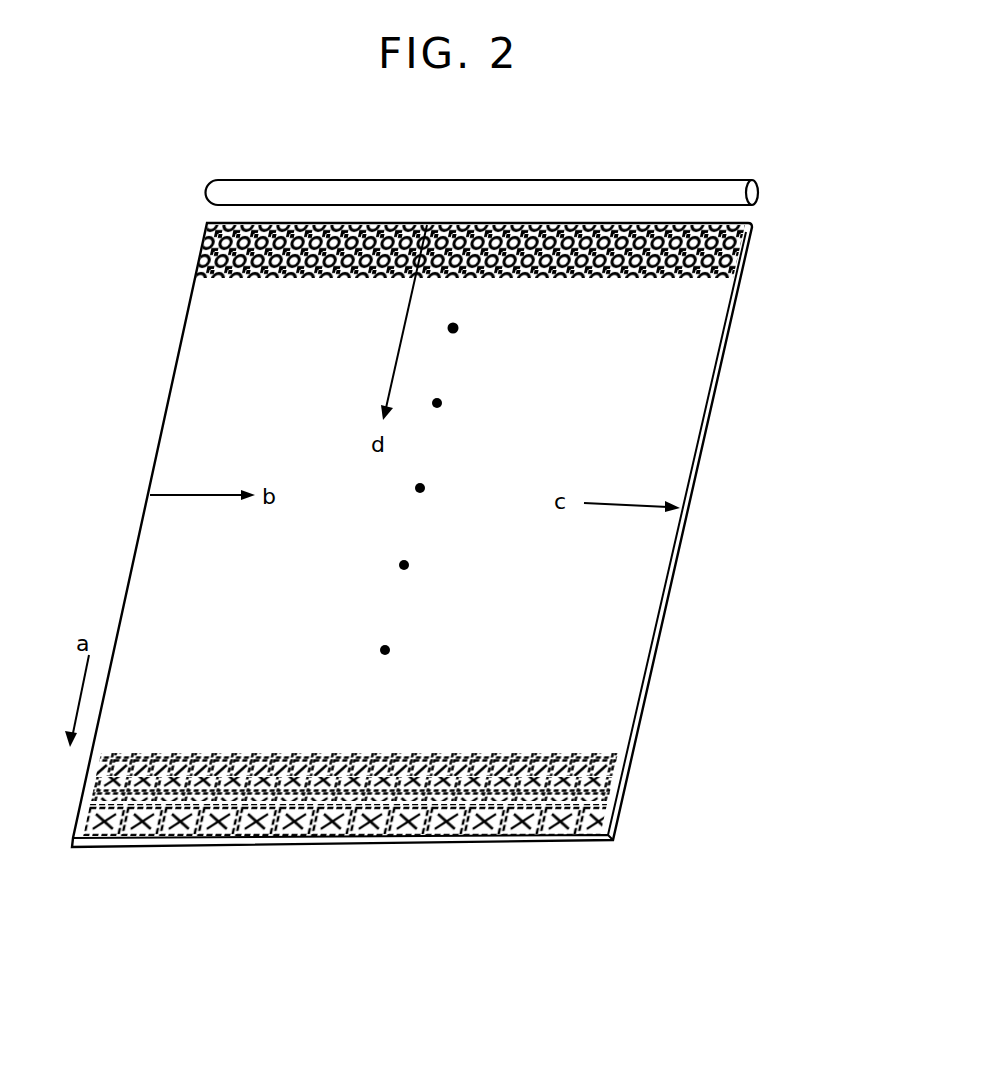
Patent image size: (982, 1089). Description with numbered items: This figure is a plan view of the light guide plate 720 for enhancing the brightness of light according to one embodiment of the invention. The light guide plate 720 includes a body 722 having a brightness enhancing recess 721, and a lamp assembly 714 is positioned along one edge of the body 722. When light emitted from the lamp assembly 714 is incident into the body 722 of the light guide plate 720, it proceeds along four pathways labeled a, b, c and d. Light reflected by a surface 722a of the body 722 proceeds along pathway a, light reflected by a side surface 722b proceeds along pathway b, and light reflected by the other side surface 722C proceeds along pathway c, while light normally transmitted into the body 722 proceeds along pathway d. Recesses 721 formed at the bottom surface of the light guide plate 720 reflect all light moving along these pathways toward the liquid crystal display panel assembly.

The lamp assembly 714 is at (758, 192).
The light guide plate 720 is at (695, 462).
The brightness enhancing recess 721 is at (615, 820).
The body 722 is at (717, 378).
The surface 722a is at (366, 843).
The side surface 722b is at (147, 487).
The other side surface 722C is at (676, 570).